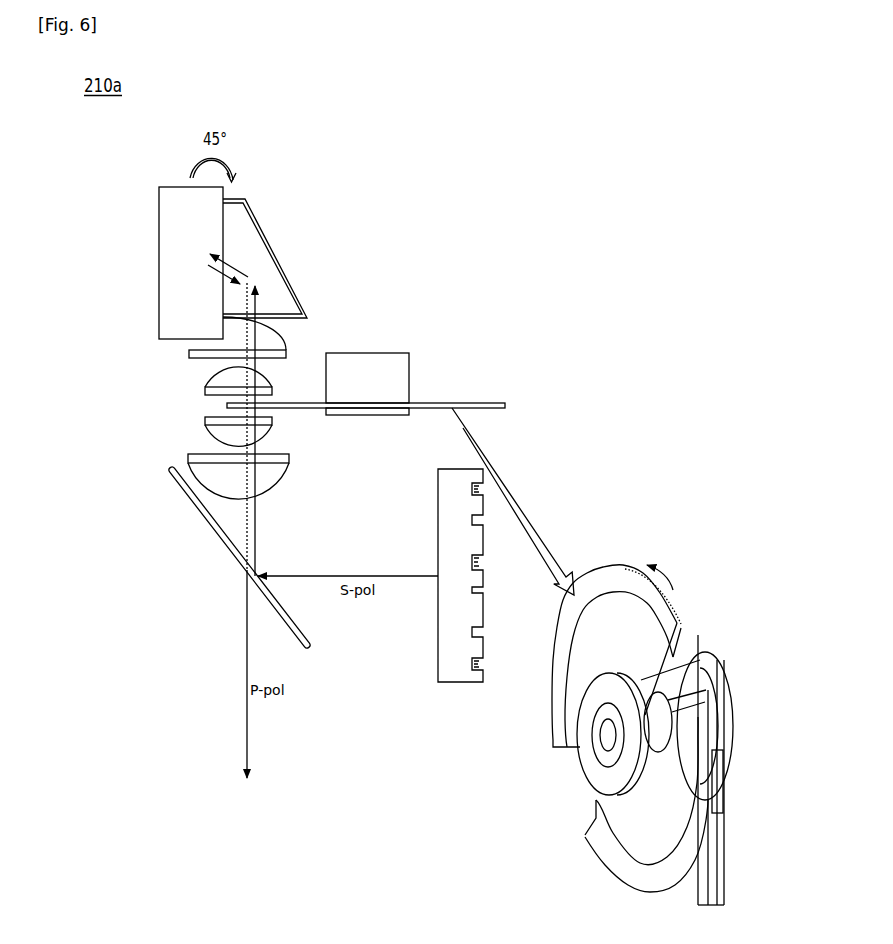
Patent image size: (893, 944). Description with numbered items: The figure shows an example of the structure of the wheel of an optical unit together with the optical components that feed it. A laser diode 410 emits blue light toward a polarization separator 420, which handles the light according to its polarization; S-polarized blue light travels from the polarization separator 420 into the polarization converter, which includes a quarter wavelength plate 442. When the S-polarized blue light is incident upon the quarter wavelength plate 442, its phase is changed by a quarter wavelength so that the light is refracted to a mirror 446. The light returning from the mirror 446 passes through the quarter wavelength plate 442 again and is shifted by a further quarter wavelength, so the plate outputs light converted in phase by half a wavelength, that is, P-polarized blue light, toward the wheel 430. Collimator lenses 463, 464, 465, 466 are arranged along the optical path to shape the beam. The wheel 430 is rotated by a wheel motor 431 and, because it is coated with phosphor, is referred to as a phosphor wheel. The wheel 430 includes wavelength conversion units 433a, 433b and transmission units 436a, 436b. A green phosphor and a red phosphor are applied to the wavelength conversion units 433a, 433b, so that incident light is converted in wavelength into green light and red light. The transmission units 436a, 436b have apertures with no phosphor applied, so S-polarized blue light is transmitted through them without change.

The laser diode 410 is at (462, 682).
The polarization separator 420 is at (205, 518).
The wheel 430 is at (462, 403).
The wheel motor 431 is at (397, 348).
The wavelength conversion unit 433a is at (680, 775).
The wavelength conversion unit 433b is at (618, 628).
The transmission unit 436a is at (686, 648).
The transmission unit 436b is at (577, 784).
The quarter wavelength plate 442 is at (273, 246).
The mirror 446 is at (159, 216).
The collimator lens 463 is at (188, 460).
The collimator lens 464 is at (205, 421).
The collimator lens 465 is at (205, 392).
The collimator lens 466 is at (189, 356).